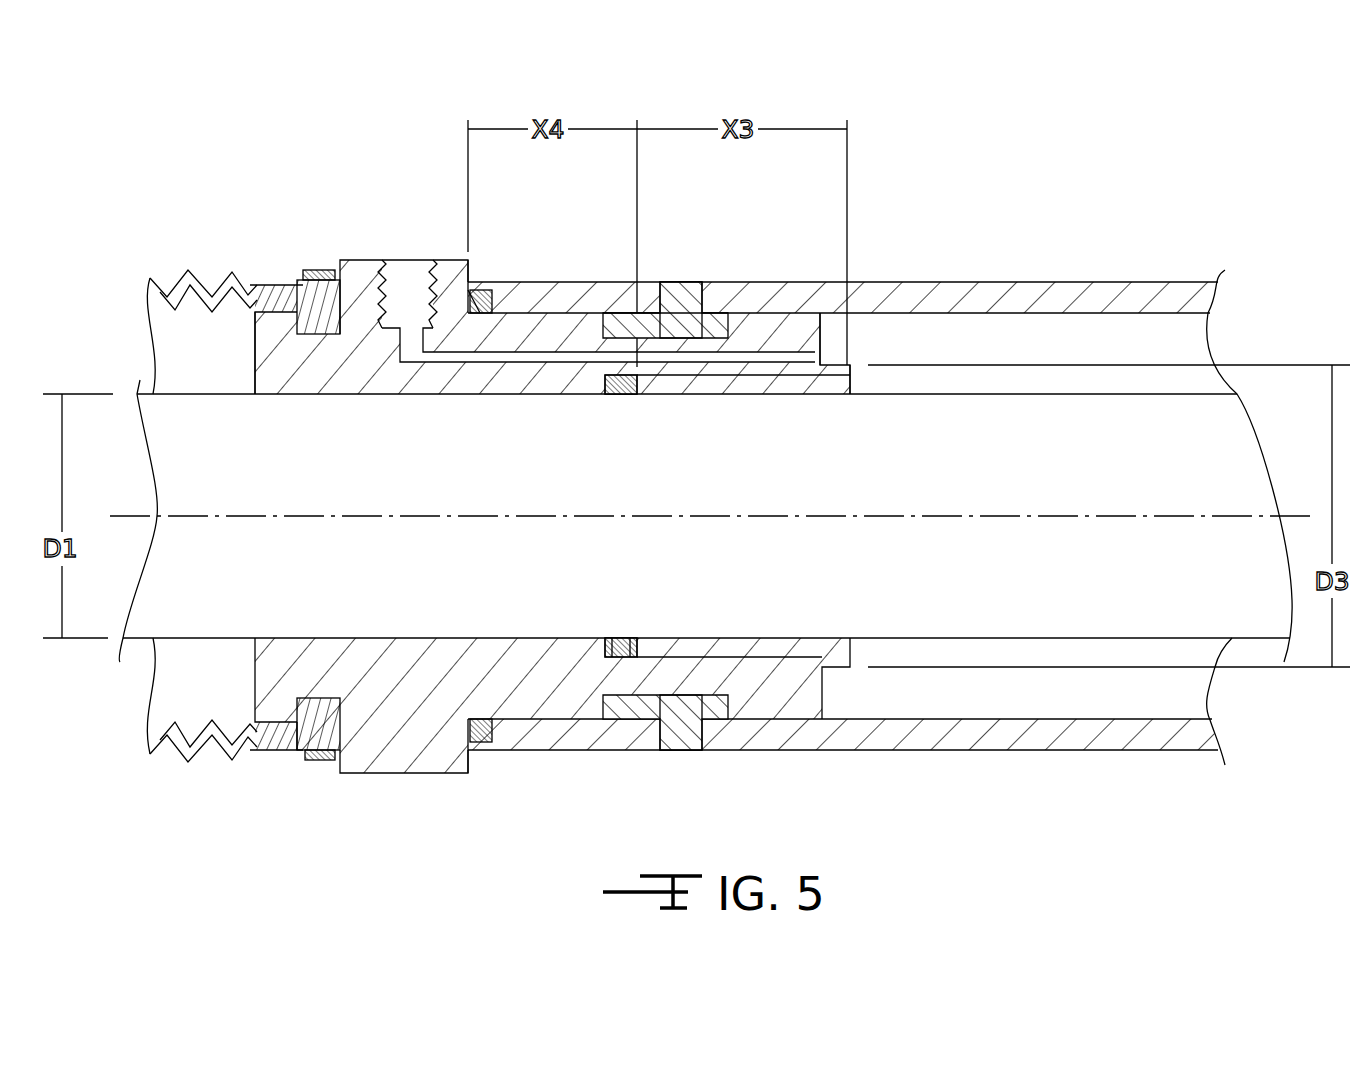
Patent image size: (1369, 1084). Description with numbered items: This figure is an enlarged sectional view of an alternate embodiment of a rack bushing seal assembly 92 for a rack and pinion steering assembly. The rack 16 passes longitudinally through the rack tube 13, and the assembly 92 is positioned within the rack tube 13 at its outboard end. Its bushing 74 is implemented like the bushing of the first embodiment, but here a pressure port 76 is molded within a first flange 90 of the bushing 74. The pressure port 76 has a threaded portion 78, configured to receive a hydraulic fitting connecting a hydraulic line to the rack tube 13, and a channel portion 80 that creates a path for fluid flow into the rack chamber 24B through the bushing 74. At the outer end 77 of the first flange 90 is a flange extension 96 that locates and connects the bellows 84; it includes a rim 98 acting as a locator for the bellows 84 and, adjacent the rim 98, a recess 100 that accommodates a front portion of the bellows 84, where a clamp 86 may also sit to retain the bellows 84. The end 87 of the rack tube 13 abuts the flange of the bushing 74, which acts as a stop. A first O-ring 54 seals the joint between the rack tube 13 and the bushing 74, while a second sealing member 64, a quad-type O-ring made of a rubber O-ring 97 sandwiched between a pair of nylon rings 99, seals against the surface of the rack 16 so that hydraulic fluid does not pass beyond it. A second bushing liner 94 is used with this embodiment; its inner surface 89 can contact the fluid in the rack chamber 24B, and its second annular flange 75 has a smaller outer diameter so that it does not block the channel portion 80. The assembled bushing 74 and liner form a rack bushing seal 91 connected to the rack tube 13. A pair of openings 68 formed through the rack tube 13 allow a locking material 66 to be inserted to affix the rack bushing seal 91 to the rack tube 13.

The rack tube 13 is at (1172, 282).
The rack 16 is at (1195, 457).
The rack chamber 24B is at (987, 350).
The first O-ring 54 is at (498, 310).
The second sealing member 64 is at (619, 396).
The locking material 66 is at (662, 282).
The openings 68 is at (710, 290).
The bushing 74 is at (437, 198).
The second annular flange 75 is at (852, 362).
The pressure port 76 is at (452, 260).
The outer end 77 is at (334, 762).
The threaded portion 78 is at (386, 268).
The channel portion 80 is at (830, 350).
The bellows 84 is at (216, 277).
The clamp 86 is at (322, 278).
The end of the rack tube 87 is at (488, 300).
The inner surface 89 is at (740, 393).
The first flange 90 is at (360, 250).
The rack bushing seal 91 is at (493, 783).
The rack bushing seal assembly 92 is at (603, 228).
The second bushing liner 94 is at (862, 383).
The flange extension 96 is at (308, 790).
The rubber O-ring 97 is at (616, 637).
The rim 98 is at (255, 335).
The nylon rings 99 is at (604, 637).
The recess 100 is at (261, 285).